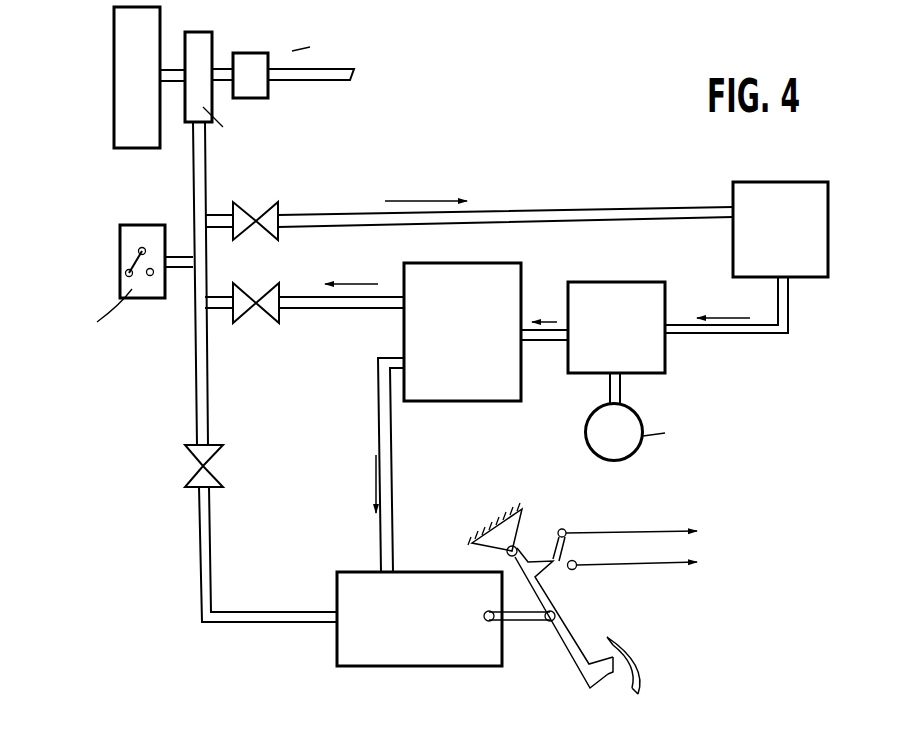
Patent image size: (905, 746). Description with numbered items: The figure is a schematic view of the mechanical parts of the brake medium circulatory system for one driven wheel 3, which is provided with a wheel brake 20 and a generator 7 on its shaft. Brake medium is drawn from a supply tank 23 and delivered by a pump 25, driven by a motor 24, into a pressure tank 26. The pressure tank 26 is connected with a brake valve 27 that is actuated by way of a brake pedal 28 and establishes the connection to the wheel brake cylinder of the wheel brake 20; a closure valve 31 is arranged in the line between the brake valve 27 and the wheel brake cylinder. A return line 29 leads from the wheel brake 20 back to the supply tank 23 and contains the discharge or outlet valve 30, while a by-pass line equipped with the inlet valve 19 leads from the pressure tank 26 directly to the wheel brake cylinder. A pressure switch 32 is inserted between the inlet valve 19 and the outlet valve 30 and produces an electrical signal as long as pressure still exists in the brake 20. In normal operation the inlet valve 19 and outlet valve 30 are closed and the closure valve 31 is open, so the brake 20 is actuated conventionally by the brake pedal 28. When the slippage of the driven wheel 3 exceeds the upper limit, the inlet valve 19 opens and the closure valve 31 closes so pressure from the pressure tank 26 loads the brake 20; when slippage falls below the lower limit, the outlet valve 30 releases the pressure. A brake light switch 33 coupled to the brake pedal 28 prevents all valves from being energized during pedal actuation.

The driven wheel 3 is at (113, 40).
The wheel brake 20 is at (211, 35).
The generator 7 is at (257, 63).
The pressure switch 32 is at (122, 236).
The discharge or outlet valve 30 is at (277, 204).
The return line 29 is at (552, 209).
The supply tank 23 is at (733, 191).
The inlet valve 19 is at (267, 287).
The pressure tank 26 is at (503, 262).
The pump 25 is at (642, 280).
The motor 24 is at (630, 404).
The closure valve 31 is at (217, 458).
The brake valve 27 is at (338, 572).
The brake pedal 28 is at (553, 628).
The brake light switch 33 is at (563, 529).